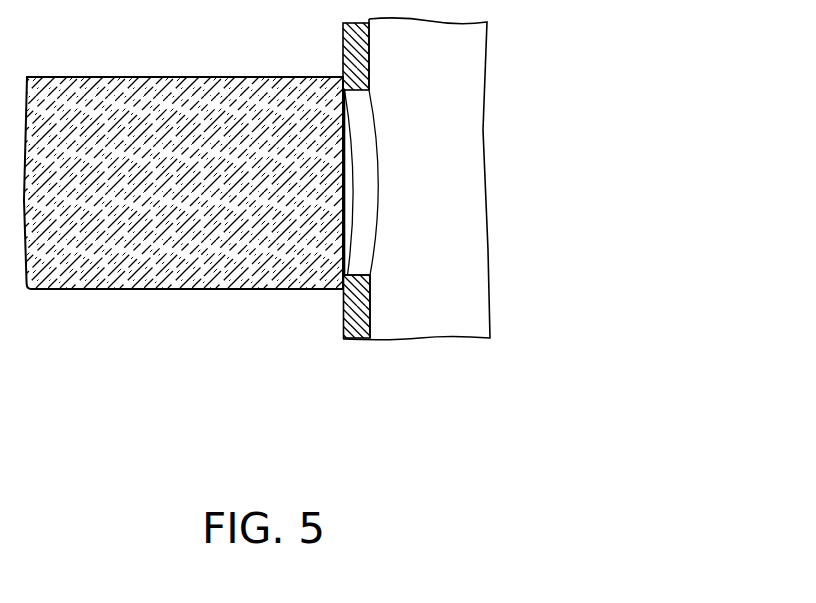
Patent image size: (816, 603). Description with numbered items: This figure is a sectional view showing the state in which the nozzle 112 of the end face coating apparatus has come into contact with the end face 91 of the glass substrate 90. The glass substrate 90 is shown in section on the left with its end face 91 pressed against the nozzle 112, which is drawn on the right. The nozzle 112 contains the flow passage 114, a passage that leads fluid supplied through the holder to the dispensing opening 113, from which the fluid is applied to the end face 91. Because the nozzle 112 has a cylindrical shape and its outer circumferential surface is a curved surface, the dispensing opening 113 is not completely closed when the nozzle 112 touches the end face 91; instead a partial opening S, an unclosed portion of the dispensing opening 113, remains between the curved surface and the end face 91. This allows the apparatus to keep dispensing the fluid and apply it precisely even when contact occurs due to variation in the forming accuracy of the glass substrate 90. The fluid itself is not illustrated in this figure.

The glass substrate 90 is at (62, 77).
The end face 91 is at (343, 153).
The partial opening S is at (348, 183).
The nozzle 112 is at (343, 320).
The dispensing opening 113 is at (354, 273).
The flow passage 114 is at (370, 312).